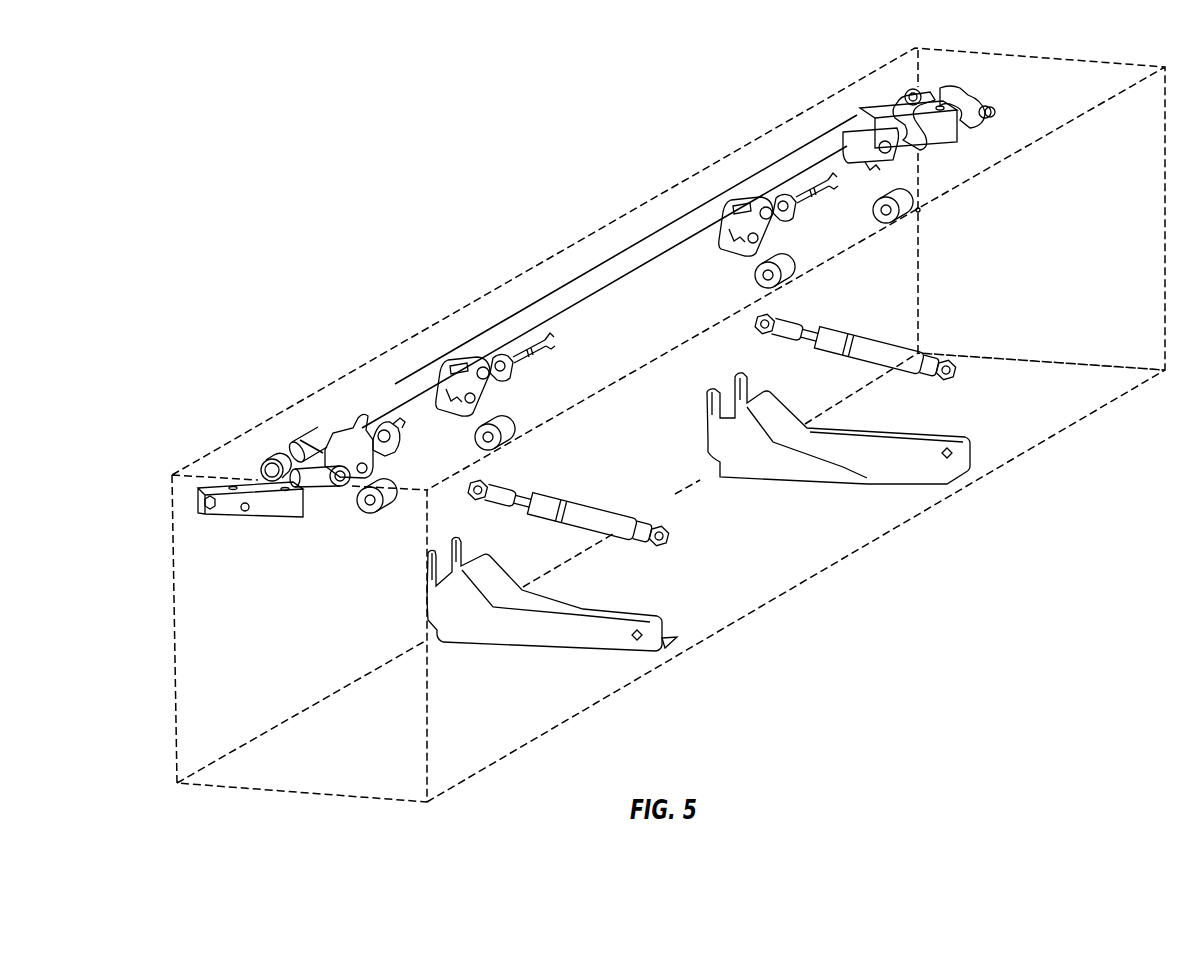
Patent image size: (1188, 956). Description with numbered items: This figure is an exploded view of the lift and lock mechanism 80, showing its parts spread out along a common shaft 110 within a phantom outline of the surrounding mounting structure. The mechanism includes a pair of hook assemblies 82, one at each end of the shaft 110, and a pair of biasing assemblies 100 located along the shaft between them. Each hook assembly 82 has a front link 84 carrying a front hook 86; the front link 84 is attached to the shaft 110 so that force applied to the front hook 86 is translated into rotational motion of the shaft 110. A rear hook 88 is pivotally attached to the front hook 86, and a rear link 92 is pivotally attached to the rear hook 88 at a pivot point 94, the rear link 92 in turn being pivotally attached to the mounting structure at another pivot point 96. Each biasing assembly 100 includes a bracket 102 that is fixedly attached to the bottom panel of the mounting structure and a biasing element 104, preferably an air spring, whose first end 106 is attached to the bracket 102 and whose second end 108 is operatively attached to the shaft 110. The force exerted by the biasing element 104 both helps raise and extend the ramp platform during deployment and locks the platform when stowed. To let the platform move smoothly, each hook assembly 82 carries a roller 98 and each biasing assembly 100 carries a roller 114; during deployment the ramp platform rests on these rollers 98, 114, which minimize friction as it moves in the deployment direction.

The lift and lock mechanism 80 is at (553, 188).
The hook assembly 82 is at (226, 440).
The front link 84 is at (863, 110).
The front hook 86 is at (357, 427).
The rear hook 88 is at (330, 437).
The rear link 92 is at (320, 478).
The pivot point 94 is at (303, 440).
The pivot point 96 is at (302, 488).
The roller 98 is at (390, 503).
The biasing assembly 100 is at (597, 492).
The bracket 102 is at (545, 632).
The biasing element 104 is at (583, 510).
The first end 106 is at (665, 535).
The second end 108 is at (487, 482).
The shaft 110 is at (610, 272).
The roller 114 is at (502, 432).